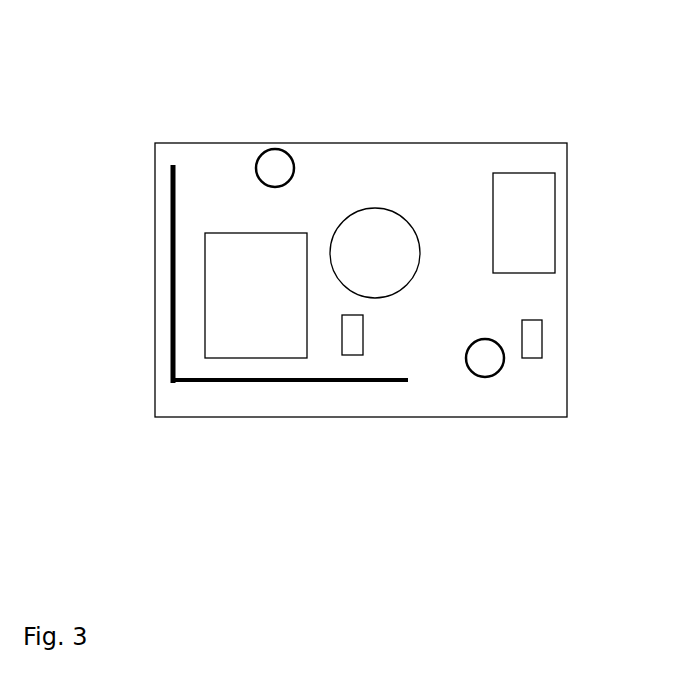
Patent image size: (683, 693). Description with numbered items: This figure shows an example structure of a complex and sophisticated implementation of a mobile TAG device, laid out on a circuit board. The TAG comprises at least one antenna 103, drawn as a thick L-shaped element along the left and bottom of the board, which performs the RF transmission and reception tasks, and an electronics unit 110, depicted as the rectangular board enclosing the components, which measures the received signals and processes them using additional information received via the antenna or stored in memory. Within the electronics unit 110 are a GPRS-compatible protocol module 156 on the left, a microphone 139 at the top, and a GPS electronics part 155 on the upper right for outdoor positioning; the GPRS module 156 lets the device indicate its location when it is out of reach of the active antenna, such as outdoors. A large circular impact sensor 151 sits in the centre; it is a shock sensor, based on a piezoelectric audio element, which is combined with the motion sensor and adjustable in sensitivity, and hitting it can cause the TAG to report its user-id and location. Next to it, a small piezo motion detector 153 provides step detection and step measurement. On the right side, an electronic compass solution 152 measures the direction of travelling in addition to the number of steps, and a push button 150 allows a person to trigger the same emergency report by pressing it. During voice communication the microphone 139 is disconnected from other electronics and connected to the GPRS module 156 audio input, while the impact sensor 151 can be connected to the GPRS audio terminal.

The electronics unit 110 is at (447, 170).
The antenna 103 is at (173, 382).
The microphone 139 is at (263, 150).
The GPRS-compatible protocol module 156 is at (243, 275).
The impact sensor 151 is at (380, 267).
The piezo motion detector 153 is at (350, 344).
The GPS electronics part 155 is at (512, 227).
The electronic compass solution 152 is at (535, 337).
The push button 150 is at (488, 360).